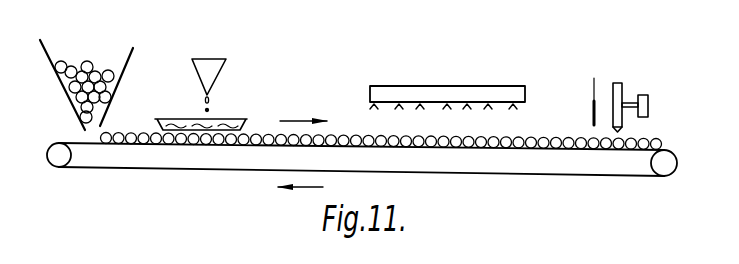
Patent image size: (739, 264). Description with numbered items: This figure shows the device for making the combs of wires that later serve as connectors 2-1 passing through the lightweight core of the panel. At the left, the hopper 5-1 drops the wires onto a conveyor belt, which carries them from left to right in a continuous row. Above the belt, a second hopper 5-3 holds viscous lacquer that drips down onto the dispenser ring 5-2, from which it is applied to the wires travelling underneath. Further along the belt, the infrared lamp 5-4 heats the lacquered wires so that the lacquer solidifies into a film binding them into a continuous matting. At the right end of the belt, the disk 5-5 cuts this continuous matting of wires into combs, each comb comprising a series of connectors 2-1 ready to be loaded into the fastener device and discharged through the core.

The hopper 5-1 is at (133, 56).
The dispenser ring 5-2 is at (220, 119).
The hopper 5-3 is at (215, 69).
The infrared lamp 5-4 is at (420, 88).
The disk 5-5 is at (618, 83).
The connector 2-1 is at (453, 146).